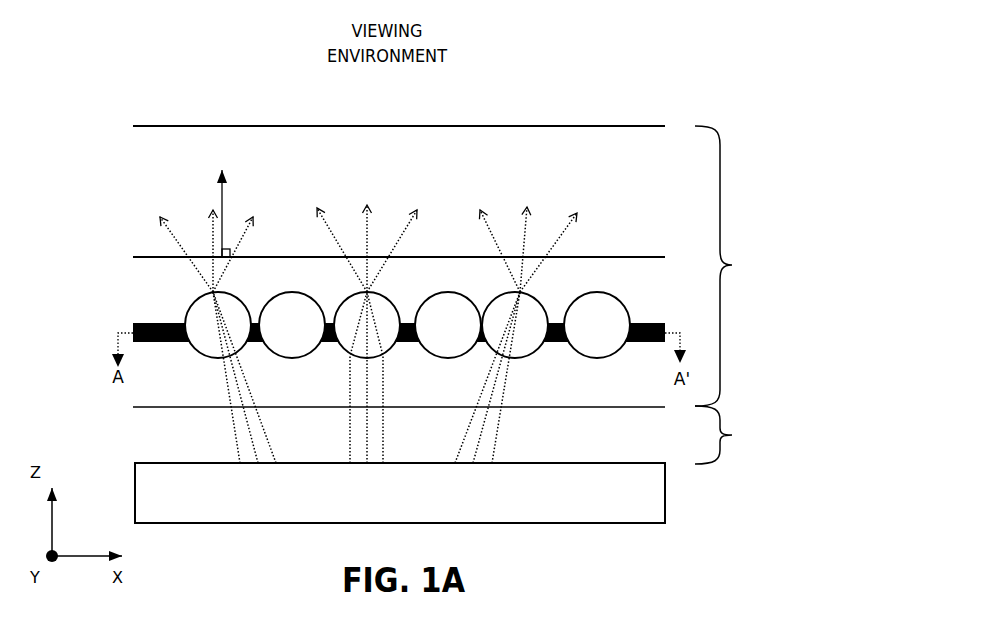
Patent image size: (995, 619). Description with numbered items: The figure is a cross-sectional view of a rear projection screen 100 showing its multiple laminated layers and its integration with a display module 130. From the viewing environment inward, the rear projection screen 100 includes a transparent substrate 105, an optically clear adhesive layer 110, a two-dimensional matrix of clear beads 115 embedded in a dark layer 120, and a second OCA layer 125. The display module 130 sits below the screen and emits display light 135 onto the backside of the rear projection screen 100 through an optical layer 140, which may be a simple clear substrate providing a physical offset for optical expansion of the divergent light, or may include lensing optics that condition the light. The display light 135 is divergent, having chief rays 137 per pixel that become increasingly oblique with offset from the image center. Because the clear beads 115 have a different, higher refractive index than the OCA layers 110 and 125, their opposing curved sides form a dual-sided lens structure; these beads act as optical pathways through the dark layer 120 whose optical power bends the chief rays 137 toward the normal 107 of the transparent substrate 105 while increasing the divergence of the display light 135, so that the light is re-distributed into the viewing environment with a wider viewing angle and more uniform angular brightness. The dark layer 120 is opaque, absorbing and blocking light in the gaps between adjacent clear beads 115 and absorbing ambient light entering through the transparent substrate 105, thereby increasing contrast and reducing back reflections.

The rear projection screen 100 is at (768, 266).
The transparent substrate 105 is at (399, 153).
The normal 107 is at (224, 186).
The OCA layer 110 is at (399, 270).
The clear beads 115 is at (407, 325).
The dark layer 120 is at (133, 331).
The OCA layer 125 is at (399, 388).
The display module 130 is at (400, 493).
The display light 135 is at (223, 413).
The chief rays 137 is at (205, 233).
The optical layer 140 is at (733, 435).